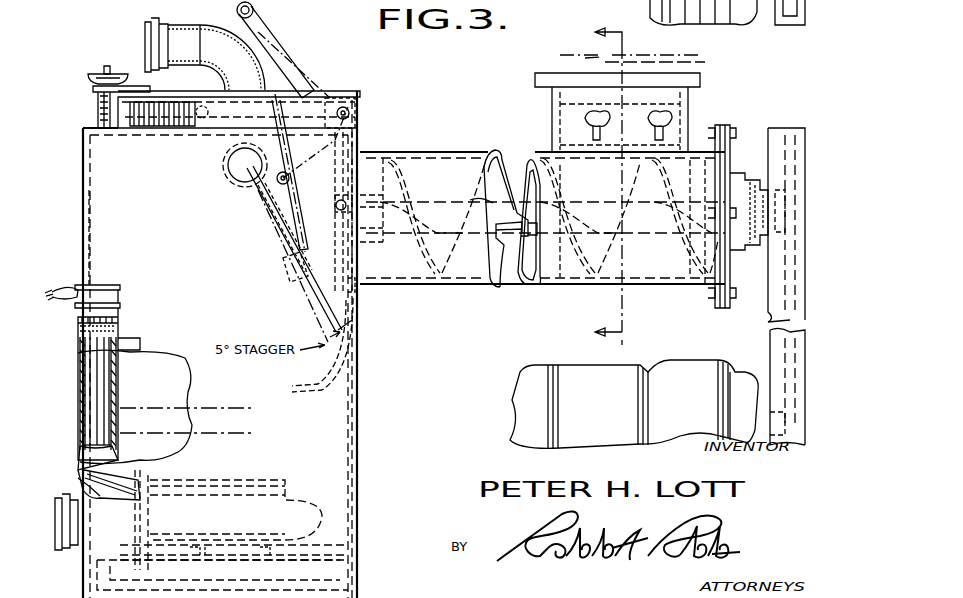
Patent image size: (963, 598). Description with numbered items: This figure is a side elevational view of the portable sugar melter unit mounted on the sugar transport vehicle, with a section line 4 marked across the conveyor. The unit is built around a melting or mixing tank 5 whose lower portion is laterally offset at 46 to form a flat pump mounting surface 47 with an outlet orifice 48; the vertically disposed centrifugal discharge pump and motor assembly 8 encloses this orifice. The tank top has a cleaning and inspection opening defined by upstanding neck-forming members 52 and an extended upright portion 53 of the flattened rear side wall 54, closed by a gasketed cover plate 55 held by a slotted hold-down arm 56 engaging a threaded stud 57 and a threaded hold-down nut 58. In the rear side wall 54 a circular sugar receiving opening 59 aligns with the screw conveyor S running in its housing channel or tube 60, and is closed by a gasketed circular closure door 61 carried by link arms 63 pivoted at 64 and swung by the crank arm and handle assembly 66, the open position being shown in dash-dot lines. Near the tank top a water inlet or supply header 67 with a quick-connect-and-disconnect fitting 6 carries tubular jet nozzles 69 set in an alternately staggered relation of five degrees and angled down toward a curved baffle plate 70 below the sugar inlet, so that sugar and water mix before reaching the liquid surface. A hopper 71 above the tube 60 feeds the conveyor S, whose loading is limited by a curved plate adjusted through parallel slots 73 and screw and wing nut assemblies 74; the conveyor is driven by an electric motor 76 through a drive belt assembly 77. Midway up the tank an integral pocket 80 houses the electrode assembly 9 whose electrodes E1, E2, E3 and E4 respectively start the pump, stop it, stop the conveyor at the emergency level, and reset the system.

The melting or mixing tank 5 is at (75, 146).
The quick-connect-and-disconnect fitting 6 is at (150, 20).
The centrifugal discharge pump and motor assembly 8 is at (300, 460).
The electrode assembly 9 is at (66, 325).
The laterally offset lower portion 46 is at (348, 578).
The pump mounting surface 47 is at (318, 560).
The outlet orifice 48 is at (255, 565).
The neck-forming members 52 is at (160, 118).
The extended upright portion 53 is at (362, 108).
The flattened rear side wall 54 is at (370, 354).
The cover plate 55 is at (168, 92).
The slotted hold-down arm 56 is at (93, 89).
The threaded stud 57 is at (107, 66).
The threaded hold-down nut 58 is at (90, 80).
The sugar receiving opening 59 is at (362, 150).
The housing channel or tube 60 is at (545, 286).
The circular closure door 61 is at (262, 212).
The link arms 63 is at (322, 147).
The pivot 64 is at (335, 190).
The crank arm and handle assembly 66 is at (332, 92).
The water inlet or supply header 67 is at (224, 160).
The tubular jet nozzles 69 is at (268, 232).
The curved baffle plate 70 is at (318, 384).
The hopper 71 is at (688, 100).
The parallel slots 73 is at (634, 138).
The screw and wing nut assemblies 74 is at (592, 120).
The electric motor 76 is at (634, 404).
The drive belt assembly 77 is at (770, 330).
The integral pocket 80 is at (78, 455).
The section line 4 is at (593, 186).
The screw conveyor S is at (528, 160).
The electrode E1 is at (85, 432).
The electrode E2 is at (95, 482).
The electrode E3 is at (106, 408).
The electrode E4 is at (102, 432).